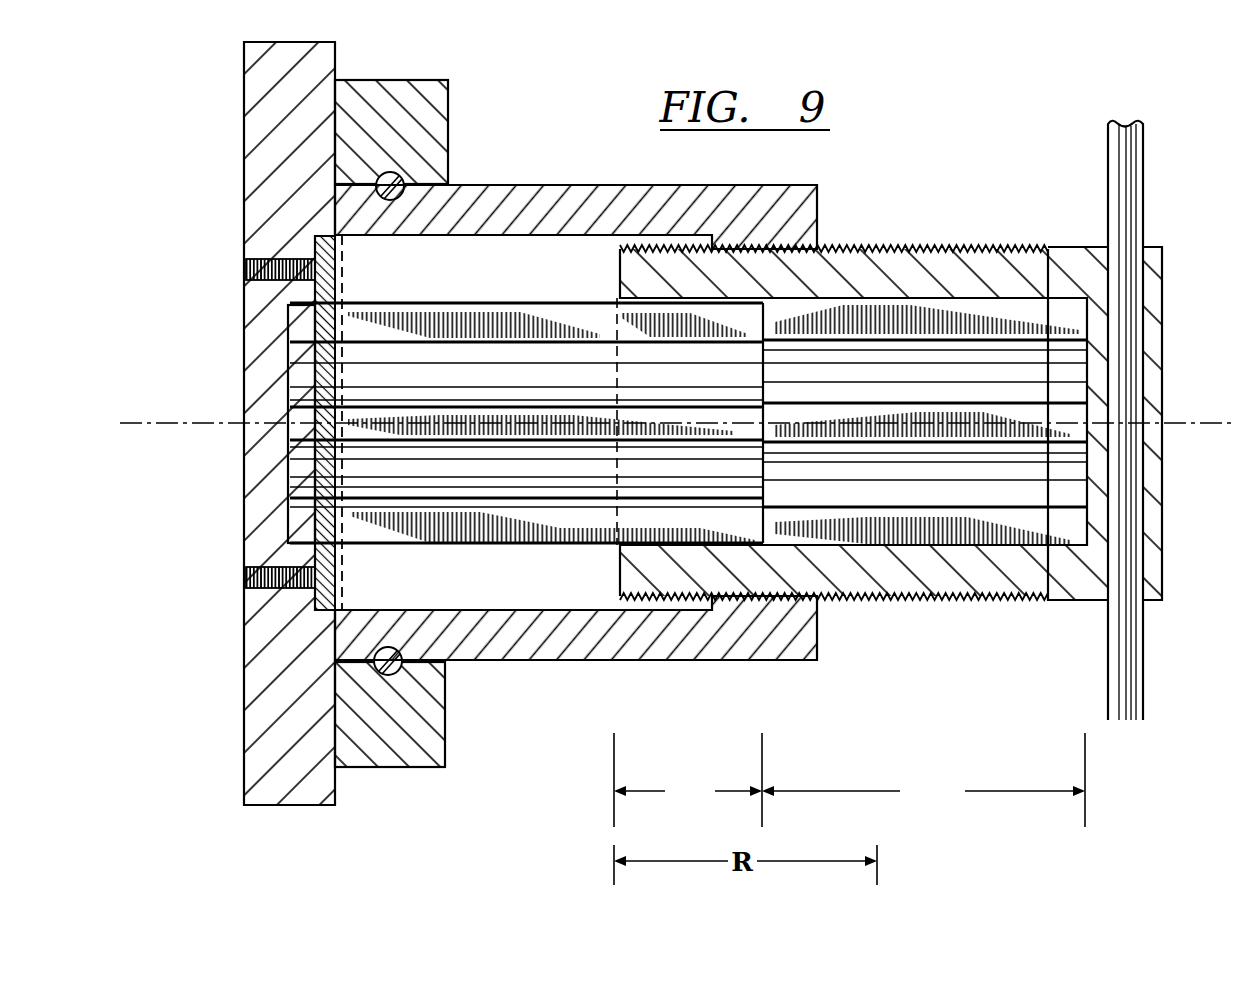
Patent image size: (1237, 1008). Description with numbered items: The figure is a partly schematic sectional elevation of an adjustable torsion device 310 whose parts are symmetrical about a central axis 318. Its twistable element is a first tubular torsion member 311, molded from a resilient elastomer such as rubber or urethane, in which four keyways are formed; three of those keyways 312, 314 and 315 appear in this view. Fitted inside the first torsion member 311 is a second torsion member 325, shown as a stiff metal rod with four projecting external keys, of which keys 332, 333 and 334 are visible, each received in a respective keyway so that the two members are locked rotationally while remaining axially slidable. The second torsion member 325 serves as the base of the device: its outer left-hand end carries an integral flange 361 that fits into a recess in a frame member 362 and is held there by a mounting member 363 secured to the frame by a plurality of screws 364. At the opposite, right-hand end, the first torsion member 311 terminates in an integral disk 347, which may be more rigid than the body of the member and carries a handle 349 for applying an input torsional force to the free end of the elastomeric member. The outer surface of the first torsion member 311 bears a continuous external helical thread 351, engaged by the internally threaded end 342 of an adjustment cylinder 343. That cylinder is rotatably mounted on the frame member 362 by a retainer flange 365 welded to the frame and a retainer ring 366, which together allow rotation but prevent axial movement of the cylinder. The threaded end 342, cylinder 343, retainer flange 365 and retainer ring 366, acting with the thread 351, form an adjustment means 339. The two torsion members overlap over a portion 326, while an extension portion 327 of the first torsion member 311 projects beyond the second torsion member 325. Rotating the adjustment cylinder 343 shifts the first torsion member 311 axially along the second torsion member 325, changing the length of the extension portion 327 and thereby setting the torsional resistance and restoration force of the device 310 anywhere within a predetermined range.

The adjustable torsion device 310 is at (884, 155).
The first tubular torsion member 311 is at (1024, 266).
The keyway 312 is at (807, 322).
The keyway 314 is at (990, 525).
The keyway 315 is at (1033, 418).
The central axis 318 is at (213, 418).
The second torsion member 325 is at (481, 366).
The overlap portion 326 is at (688, 780).
The extension portion 327 is at (923, 780).
The external key 332 is at (447, 322).
The external key 333 is at (598, 420).
The external key 334 is at (378, 527).
The adjustment means 339 is at (534, 144).
The internally threaded end 342 is at (805, 640).
The adjustment cylinder 343 is at (640, 628).
The integral disk 347 is at (1158, 525).
The handle 349 is at (1128, 196).
The external helical thread 351 is at (836, 249).
The integral flange 361 is at (300, 466).
The frame member 362 is at (282, 660).
The mounting member 363 is at (318, 243).
The screws 364 is at (248, 266).
The retainer flange 365 is at (423, 97).
The retainer ring 366 is at (403, 176).